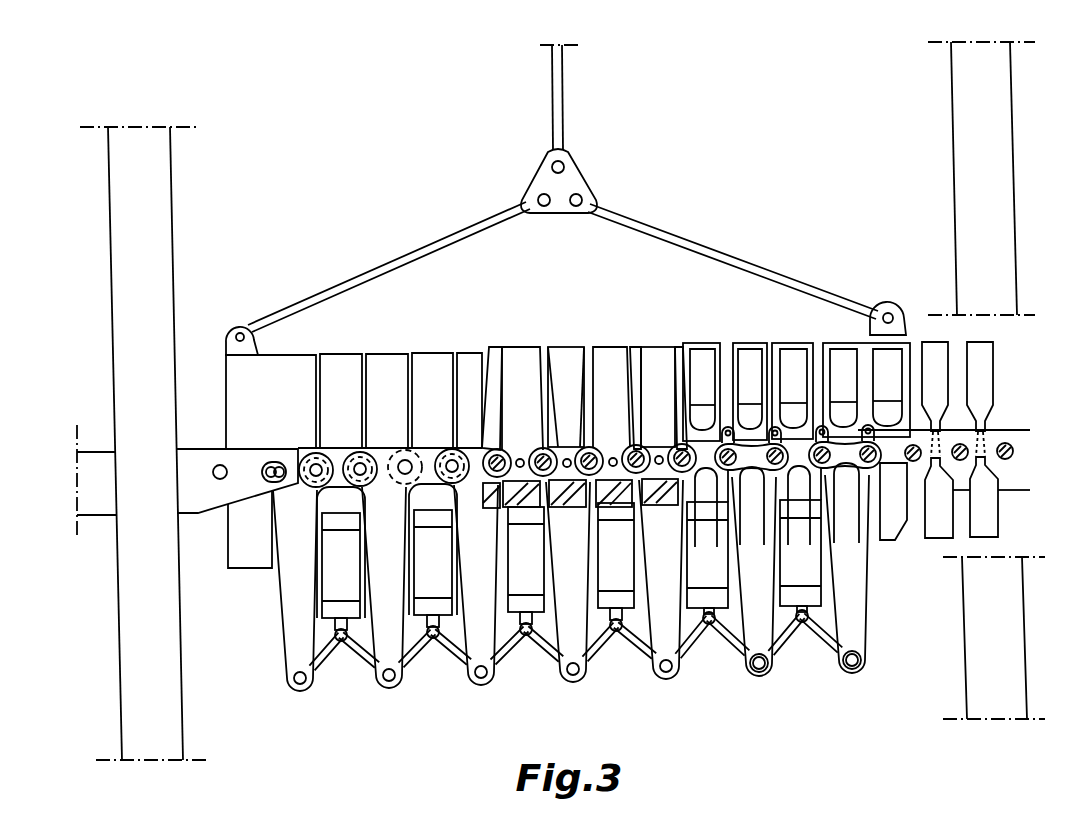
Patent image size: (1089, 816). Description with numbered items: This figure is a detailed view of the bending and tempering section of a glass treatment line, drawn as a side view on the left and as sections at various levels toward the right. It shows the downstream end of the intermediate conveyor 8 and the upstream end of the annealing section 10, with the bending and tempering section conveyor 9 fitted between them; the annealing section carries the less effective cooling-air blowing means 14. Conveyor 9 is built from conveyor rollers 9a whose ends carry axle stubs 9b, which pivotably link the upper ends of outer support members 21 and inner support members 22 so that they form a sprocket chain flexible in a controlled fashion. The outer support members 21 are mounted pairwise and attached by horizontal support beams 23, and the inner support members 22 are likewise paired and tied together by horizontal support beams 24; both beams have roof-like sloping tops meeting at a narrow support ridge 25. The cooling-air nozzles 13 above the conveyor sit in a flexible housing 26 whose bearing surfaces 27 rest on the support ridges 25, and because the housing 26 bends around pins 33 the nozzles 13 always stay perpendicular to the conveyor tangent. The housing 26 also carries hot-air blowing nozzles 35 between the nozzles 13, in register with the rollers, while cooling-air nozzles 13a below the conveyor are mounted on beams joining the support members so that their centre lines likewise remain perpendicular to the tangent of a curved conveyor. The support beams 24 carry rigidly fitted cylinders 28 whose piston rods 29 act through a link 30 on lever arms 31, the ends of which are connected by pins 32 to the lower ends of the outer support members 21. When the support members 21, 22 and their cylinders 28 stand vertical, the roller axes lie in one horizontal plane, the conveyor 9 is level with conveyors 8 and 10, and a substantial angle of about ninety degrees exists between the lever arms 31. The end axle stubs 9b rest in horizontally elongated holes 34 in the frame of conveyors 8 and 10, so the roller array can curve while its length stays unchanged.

The intermediate conveyor 8 is at (203, 436).
The bending and tempering section conveyor 9 is at (444, 432).
The conveyor rollers 9a is at (750, 455).
The axle stubs 9b is at (276, 460).
The annealing section 10 is at (1012, 422).
The cooling-air blowing nozzles 13 is at (703, 362).
The cooling-air blowing nozzles below the conveyor 13a is at (752, 522).
The cooling-air blowing means 14 is at (975, 352).
The outer support members 21 is at (299, 574).
The inner support members 22 is at (333, 498).
The horizontal support beams 23 is at (590, 640).
The horizontal support beams 24 is at (523, 525).
The support ridge 25 is at (680, 635).
The flexible housing 26 is at (580, 340).
The bearing surfaces 27 is at (559, 447).
The cylinders 28 is at (803, 555).
The piston rods 29 is at (815, 615).
The link 30 is at (433, 645).
The lever arms 31 is at (782, 640).
The pins 32 is at (757, 672).
The pins 33 is at (574, 478).
The horizontally elongated holes 34 is at (319, 460).
The hot-air blowing nozzles 35 is at (731, 434).